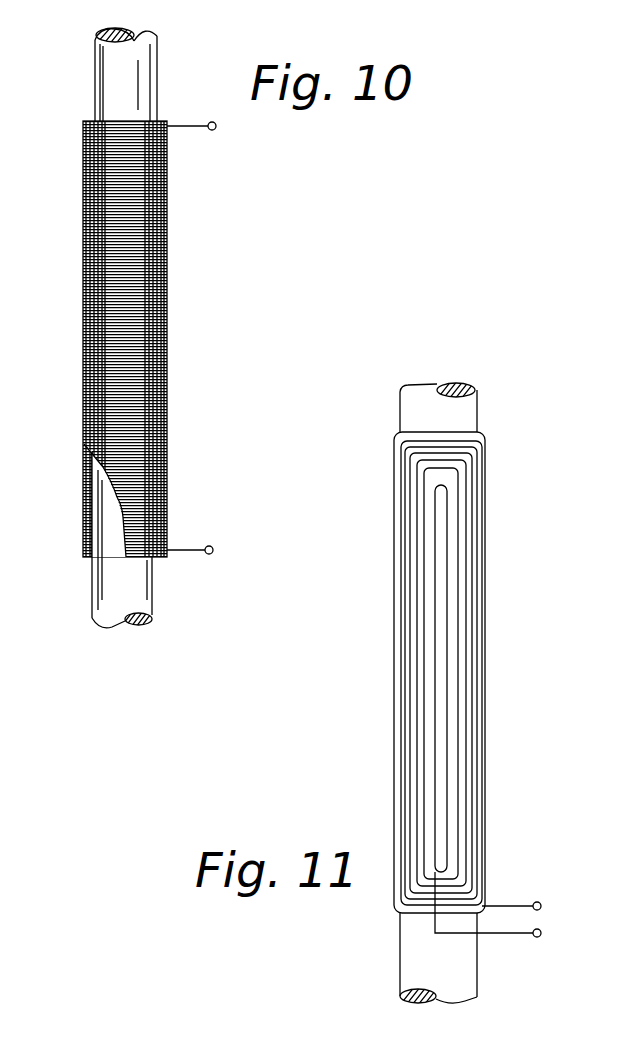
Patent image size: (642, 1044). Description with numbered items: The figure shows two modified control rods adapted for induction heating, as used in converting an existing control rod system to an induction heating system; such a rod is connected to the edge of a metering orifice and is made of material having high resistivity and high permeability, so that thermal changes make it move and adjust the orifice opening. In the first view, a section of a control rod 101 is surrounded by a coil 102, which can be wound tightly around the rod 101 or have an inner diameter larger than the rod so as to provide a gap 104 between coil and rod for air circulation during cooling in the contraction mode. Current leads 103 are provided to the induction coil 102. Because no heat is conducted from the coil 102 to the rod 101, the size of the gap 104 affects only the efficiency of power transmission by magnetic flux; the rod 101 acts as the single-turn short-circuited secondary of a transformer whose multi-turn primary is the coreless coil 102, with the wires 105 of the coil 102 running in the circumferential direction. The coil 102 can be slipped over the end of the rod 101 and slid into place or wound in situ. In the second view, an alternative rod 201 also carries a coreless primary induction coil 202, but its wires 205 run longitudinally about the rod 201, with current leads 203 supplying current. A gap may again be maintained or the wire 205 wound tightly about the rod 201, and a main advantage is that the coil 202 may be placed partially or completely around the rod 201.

In FIG. 10, the control rod 101 is at (112, 72).
In FIG. 10, the induction coil 102 is at (84, 262).
In FIG. 10, the current leads 103 is at (213, 131).
In FIG. 10, the gap 104 is at (92, 519).
In FIG. 10, the wires 105 is at (128, 298).
In FIG. 11, the control rod 201 is at (455, 413).
In FIG. 11, the induction coil 202 is at (395, 500).
In FIG. 11, the current leads 203 is at (543, 931).
In FIG. 11, the wires 205 is at (484, 512).